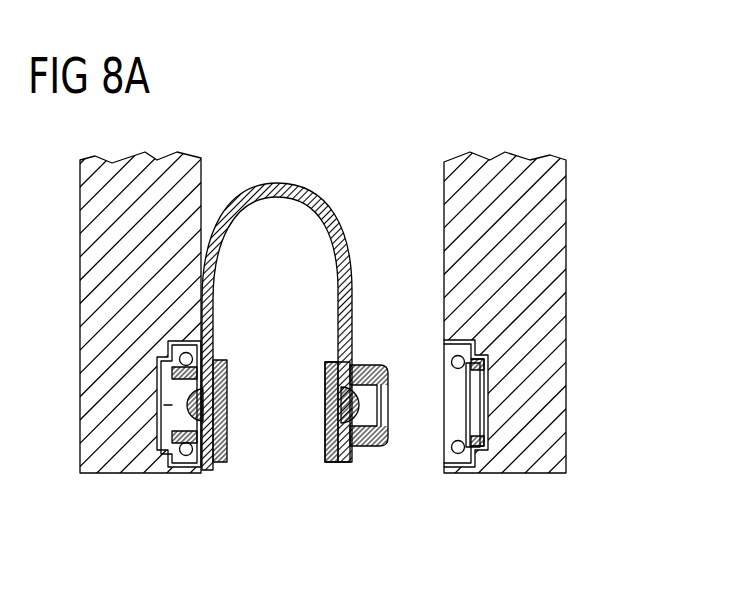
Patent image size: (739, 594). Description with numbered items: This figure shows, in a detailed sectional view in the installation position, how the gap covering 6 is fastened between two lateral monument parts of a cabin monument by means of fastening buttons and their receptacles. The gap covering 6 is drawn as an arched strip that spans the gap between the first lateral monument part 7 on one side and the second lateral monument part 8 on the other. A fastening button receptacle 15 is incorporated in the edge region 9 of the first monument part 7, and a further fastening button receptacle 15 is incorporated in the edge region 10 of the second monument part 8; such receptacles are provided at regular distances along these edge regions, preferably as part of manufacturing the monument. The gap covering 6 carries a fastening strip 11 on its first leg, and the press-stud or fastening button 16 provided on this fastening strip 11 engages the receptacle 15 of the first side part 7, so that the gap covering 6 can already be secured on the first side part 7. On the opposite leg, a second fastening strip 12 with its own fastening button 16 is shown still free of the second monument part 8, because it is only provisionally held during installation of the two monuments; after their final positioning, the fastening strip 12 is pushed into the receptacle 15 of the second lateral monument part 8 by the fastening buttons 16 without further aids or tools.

The gap covering 6 is at (324, 170).
The first lateral monument part 7 is at (95, 273).
The second lateral monument part 8 is at (550, 265).
The edge region 9 is at (231, 470).
The edge region 10 is at (388, 468).
The fastening strip 11 is at (220, 460).
The second fastening strip 12 is at (335, 465).
The fastening button receptacle 15 is at (183, 405).
The fastening button 16 is at (335, 403).